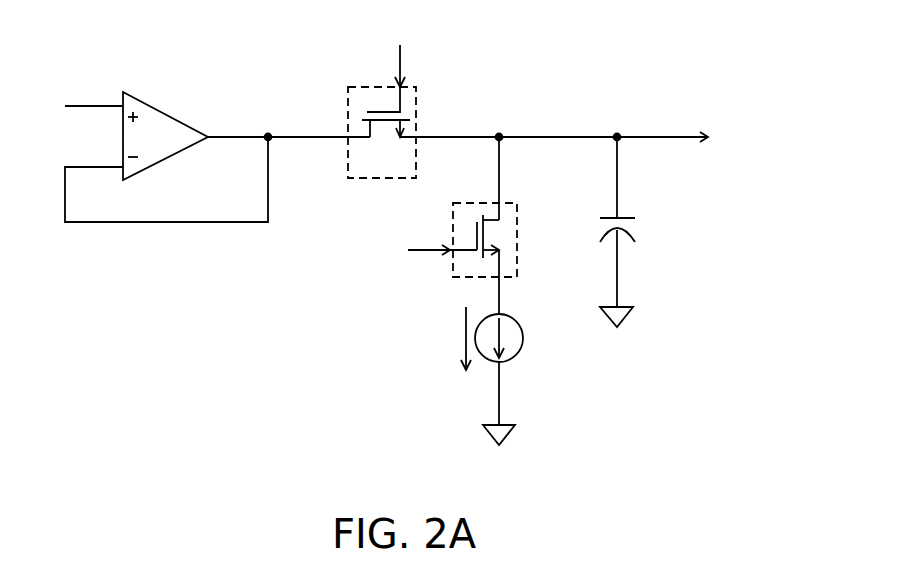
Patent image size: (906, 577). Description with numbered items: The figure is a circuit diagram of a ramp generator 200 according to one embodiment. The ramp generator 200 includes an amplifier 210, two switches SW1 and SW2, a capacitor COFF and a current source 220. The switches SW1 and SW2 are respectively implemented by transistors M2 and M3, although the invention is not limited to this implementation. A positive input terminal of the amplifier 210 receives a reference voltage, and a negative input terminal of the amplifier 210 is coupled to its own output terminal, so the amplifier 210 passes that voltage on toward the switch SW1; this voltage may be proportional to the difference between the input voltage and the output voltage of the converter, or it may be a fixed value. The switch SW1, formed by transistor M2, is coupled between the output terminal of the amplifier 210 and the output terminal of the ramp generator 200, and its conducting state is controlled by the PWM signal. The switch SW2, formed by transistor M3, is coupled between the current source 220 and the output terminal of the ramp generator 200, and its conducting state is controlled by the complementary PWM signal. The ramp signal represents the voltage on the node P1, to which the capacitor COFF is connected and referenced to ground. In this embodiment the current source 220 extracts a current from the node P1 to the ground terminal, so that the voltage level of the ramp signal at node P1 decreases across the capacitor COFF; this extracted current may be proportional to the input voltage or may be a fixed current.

The ramp generator 200 is at (697, 32).
The amplifier 210 is at (171, 110).
The current source 220 is at (523, 340).
The switch SW1 is at (417, 98).
The switch SW2 is at (512, 202).
The transistor M2 is at (383, 130).
The transistor M3 is at (507, 238).
The node P1 is at (500, 136).
The capacitor COFF is at (635, 228).